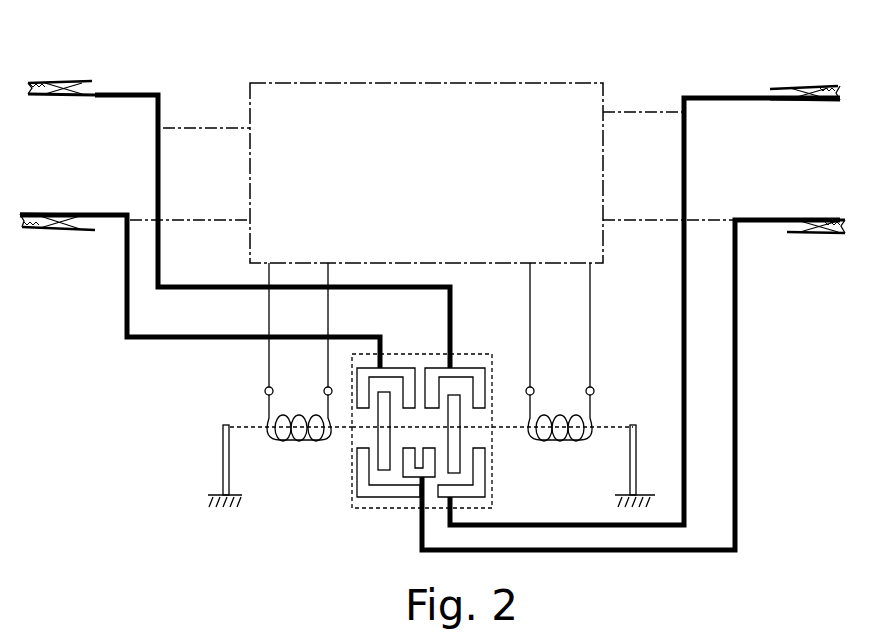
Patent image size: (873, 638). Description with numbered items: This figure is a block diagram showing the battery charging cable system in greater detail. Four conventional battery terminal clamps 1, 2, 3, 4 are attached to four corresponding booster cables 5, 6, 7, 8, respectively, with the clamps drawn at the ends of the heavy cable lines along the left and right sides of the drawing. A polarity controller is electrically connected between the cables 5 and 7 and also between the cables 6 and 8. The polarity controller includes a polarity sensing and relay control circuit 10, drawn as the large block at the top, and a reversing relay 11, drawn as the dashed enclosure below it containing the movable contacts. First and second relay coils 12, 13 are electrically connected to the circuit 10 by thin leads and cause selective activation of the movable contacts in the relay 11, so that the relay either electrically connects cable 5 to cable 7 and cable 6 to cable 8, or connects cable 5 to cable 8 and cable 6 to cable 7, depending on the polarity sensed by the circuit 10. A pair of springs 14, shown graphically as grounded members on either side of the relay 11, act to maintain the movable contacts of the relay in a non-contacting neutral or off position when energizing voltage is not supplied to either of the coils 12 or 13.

The battery terminal clamp 1 is at (60, 78).
The battery terminal clamp 2 is at (68, 232).
The battery terminal clamp 3 is at (800, 92).
The battery terminal clamp 4 is at (810, 235).
The booster cable 5 is at (145, 92).
The booster cable 6 is at (125, 285).
The booster cable 7 is at (703, 97).
The booster cable 8 is at (738, 255).
The polarity sensing and relay control circuit 10 is at (403, 85).
The reversing relay 11 is at (362, 503).
The first relay coil 12 is at (300, 440).
The second relay coil 13 is at (557, 437).
The springs 14 is at (222, 447).